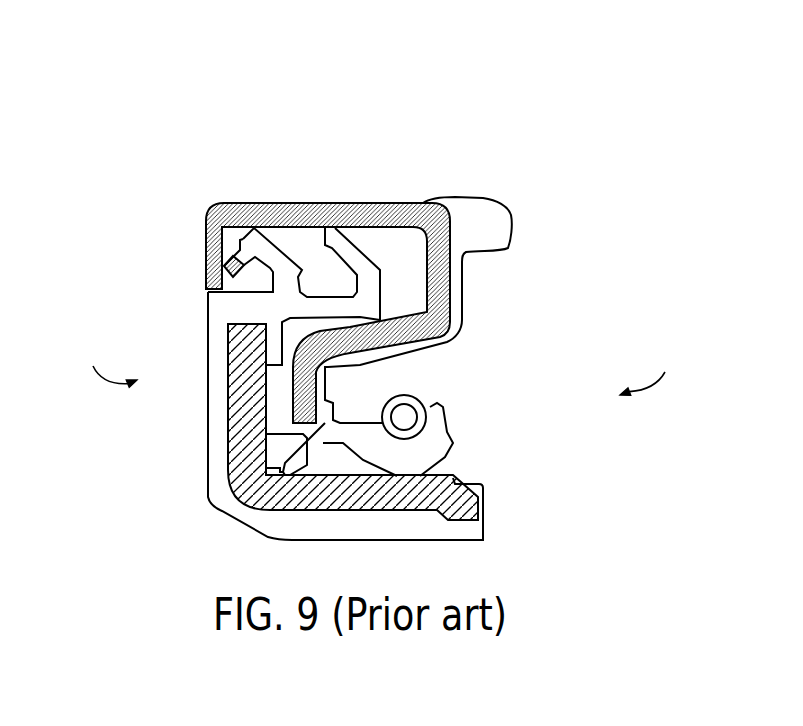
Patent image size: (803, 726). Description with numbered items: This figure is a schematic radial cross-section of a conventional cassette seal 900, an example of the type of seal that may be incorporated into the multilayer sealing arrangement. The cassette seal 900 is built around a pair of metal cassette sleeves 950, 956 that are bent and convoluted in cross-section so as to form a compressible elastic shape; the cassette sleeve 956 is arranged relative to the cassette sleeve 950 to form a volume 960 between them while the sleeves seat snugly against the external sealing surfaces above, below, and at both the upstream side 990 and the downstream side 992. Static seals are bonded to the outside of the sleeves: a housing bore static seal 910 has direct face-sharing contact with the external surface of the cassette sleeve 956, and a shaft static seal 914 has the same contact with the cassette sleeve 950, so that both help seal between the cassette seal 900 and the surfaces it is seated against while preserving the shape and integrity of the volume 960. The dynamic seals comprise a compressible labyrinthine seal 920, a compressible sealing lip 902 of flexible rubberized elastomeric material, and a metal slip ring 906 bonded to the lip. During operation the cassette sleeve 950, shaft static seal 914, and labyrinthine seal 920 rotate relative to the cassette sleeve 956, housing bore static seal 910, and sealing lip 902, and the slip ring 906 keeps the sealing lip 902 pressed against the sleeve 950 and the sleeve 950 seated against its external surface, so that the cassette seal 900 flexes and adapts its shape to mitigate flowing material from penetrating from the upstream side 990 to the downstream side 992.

The cassette seal 900 is at (246, 57).
The compressible sealing lip 902 is at (452, 445).
The slip ring 906 is at (413, 412).
The housing bore static seal 910 is at (500, 228).
The shaft static seal 914 is at (207, 498).
The compressible labyrinthine seal 920 is at (233, 251).
The cassette sleeve 950 is at (480, 495).
The cassette sleeve 956 is at (242, 200).
The volume 960 is at (397, 290).
The upstream side 990 is at (97, 364).
The downstream side 992 is at (660, 371).